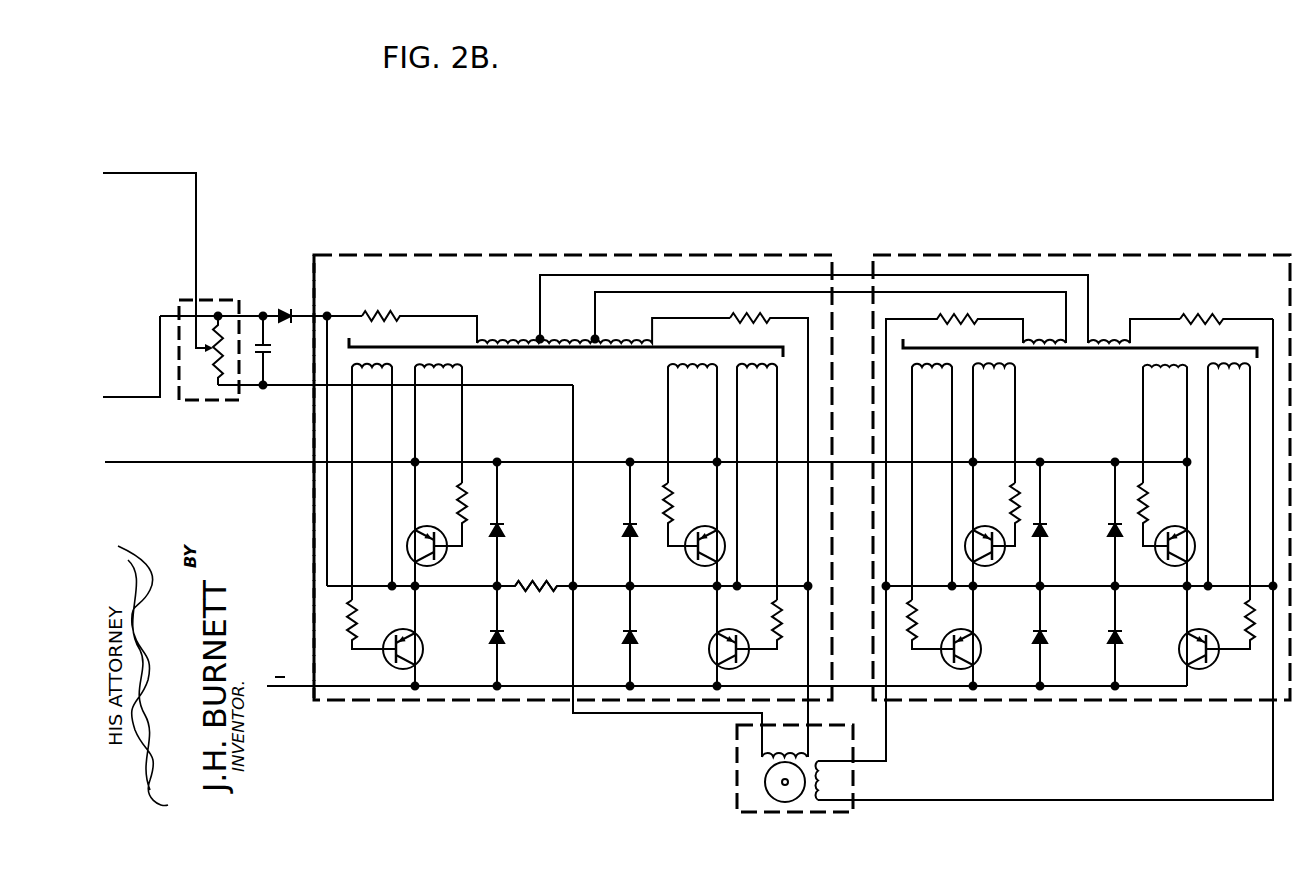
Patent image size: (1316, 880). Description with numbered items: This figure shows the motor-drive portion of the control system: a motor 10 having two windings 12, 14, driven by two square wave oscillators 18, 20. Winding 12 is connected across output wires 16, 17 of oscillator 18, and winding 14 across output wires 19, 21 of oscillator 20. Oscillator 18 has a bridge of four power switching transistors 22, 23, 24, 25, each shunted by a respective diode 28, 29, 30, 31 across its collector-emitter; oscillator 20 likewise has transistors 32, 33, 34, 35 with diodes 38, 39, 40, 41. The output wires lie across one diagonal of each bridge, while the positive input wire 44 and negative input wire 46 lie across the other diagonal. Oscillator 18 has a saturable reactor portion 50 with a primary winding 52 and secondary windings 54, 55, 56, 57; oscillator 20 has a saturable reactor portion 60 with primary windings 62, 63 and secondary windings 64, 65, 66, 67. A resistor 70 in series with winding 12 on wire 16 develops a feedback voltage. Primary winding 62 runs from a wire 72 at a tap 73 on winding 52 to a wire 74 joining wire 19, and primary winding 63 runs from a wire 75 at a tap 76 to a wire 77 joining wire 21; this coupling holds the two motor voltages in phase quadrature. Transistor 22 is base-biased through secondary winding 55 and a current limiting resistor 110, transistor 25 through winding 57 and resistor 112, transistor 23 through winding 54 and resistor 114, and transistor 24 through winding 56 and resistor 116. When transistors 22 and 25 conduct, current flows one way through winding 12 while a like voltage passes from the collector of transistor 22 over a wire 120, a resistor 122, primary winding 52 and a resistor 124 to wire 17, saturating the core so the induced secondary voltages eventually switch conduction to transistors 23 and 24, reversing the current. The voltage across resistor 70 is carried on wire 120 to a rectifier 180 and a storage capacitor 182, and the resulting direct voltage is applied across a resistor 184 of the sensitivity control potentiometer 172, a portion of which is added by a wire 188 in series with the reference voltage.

The motor 10 is at (736, 778).
The motor winding 12 is at (797, 752).
The motor winding 14 is at (820, 769).
The output wire 16 is at (722, 714).
The output wire 17 is at (809, 722).
The square wave oscillator 18 is at (795, 255).
The output wire 19 is at (887, 735).
The square wave oscillator 20 is at (1267, 255).
The output wire 21 is at (884, 800).
The power switching transistor 22 is at (449, 556).
The power switching transistor 23 is at (424, 650).
The power switching transistor 24 is at (705, 533).
The power switching transistor 25 is at (712, 646).
The diode 28 is at (503, 530).
The diode 29 is at (503, 637).
The diode 30 is at (623, 531).
The diode 31 is at (638, 638).
The power switching transistor 32 is at (993, 560).
The power switching transistor 33 is at (980, 643).
The power switching transistor 34 is at (1172, 528).
The power switching transistor 35 is at (1179, 656).
The diode 38 is at (1047, 531).
The diode 39 is at (1047, 636).
The diode 40 is at (1110, 529).
The diode 41 is at (1110, 632).
The input wire 44 is at (190, 462).
The input wire 46 is at (277, 688).
The saturable reactor portion 50 is at (428, 347).
The primary winding 52 is at (510, 340).
The secondary winding 54 is at (383, 366).
The secondary winding 55 is at (452, 366).
The secondary winding 56 is at (706, 366).
The secondary winding 57 is at (767, 366).
The saturable reactor portion 60 is at (1006, 348).
The primary winding 62 is at (1044, 337).
The primary winding 63 is at (1114, 337).
The secondary winding 64 is at (932, 366).
The secondary winding 65 is at (992, 366).
The secondary winding 66 is at (1165, 366).
The secondary winding 67 is at (1238, 366).
The resistor 70 is at (534, 586).
The wire 72 is at (855, 292).
The tap 73 is at (598, 332).
The wire 74 is at (901, 314).
The wire 75 is at (842, 275).
The tap 76 is at (542, 332).
The wire 77 is at (1268, 319).
The current limiting resistor 110 is at (459, 501).
The current limiting resistor 112 is at (772, 615).
The current limiting resistor 114 is at (350, 617).
The current limiting resistor 116 is at (673, 510).
The wire 120 is at (315, 505).
The resistor 122 is at (389, 316).
The resistor 124 is at (758, 318).
The sensitivity control potentiometer 172 is at (216, 293).
The rectifier 180 is at (286, 310).
The capacitor 182 is at (266, 354).
The resistor 184 is at (215, 356).
The wire 188 is at (154, 173).